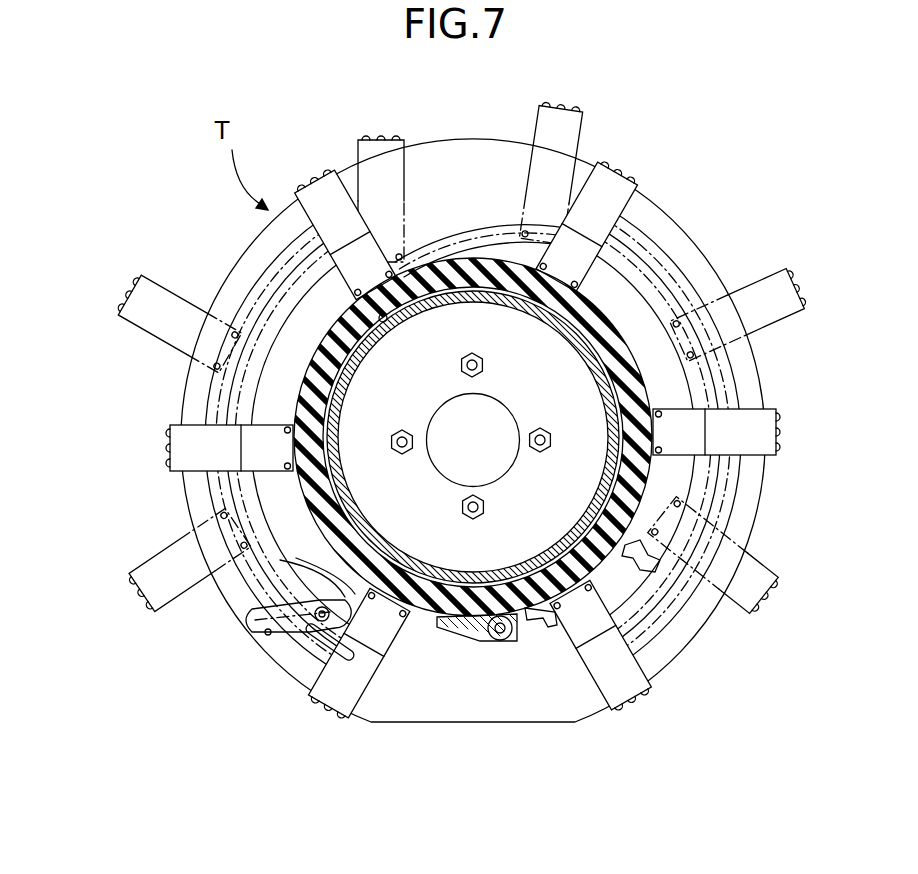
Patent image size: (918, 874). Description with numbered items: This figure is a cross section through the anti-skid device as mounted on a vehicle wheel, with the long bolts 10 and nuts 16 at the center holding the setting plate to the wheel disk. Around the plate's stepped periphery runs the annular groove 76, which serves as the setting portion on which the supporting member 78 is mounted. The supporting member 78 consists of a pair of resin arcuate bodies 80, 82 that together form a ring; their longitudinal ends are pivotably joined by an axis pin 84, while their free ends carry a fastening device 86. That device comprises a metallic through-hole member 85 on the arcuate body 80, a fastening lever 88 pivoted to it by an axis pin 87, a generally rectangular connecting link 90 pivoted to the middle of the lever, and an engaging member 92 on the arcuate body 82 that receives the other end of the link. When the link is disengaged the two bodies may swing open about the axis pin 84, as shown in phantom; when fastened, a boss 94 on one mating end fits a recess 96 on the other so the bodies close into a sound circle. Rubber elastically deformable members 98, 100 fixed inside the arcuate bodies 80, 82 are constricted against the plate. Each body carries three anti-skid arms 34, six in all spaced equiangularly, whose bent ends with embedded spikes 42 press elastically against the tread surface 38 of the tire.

The long bolt 10 is at (467, 375).
The nut 16 is at (482, 362).
The anti-skid arm 34 is at (765, 435).
The tread surface 38 is at (475, 139).
The spike 42 is at (611, 164).
The annular groove 76 is at (323, 440).
The supporting member 78 is at (637, 337).
The arcuate body 80 is at (245, 255).
The arcuate body 82 is at (608, 338).
The axis pin 84 is at (423, 260).
The through-hole member 85 is at (300, 615).
The fastening device 86 is at (505, 650).
The axis pin 87 is at (490, 610).
The fastening lever 88 is at (478, 640).
The connecting link 90 is at (330, 650).
The engaging member 92 is at (652, 568).
The boss 94 is at (367, 575).
The recess 96 is at (628, 553).
The elastically deformable member 98 is at (232, 393).
The elastically deformable member 100 is at (608, 440).